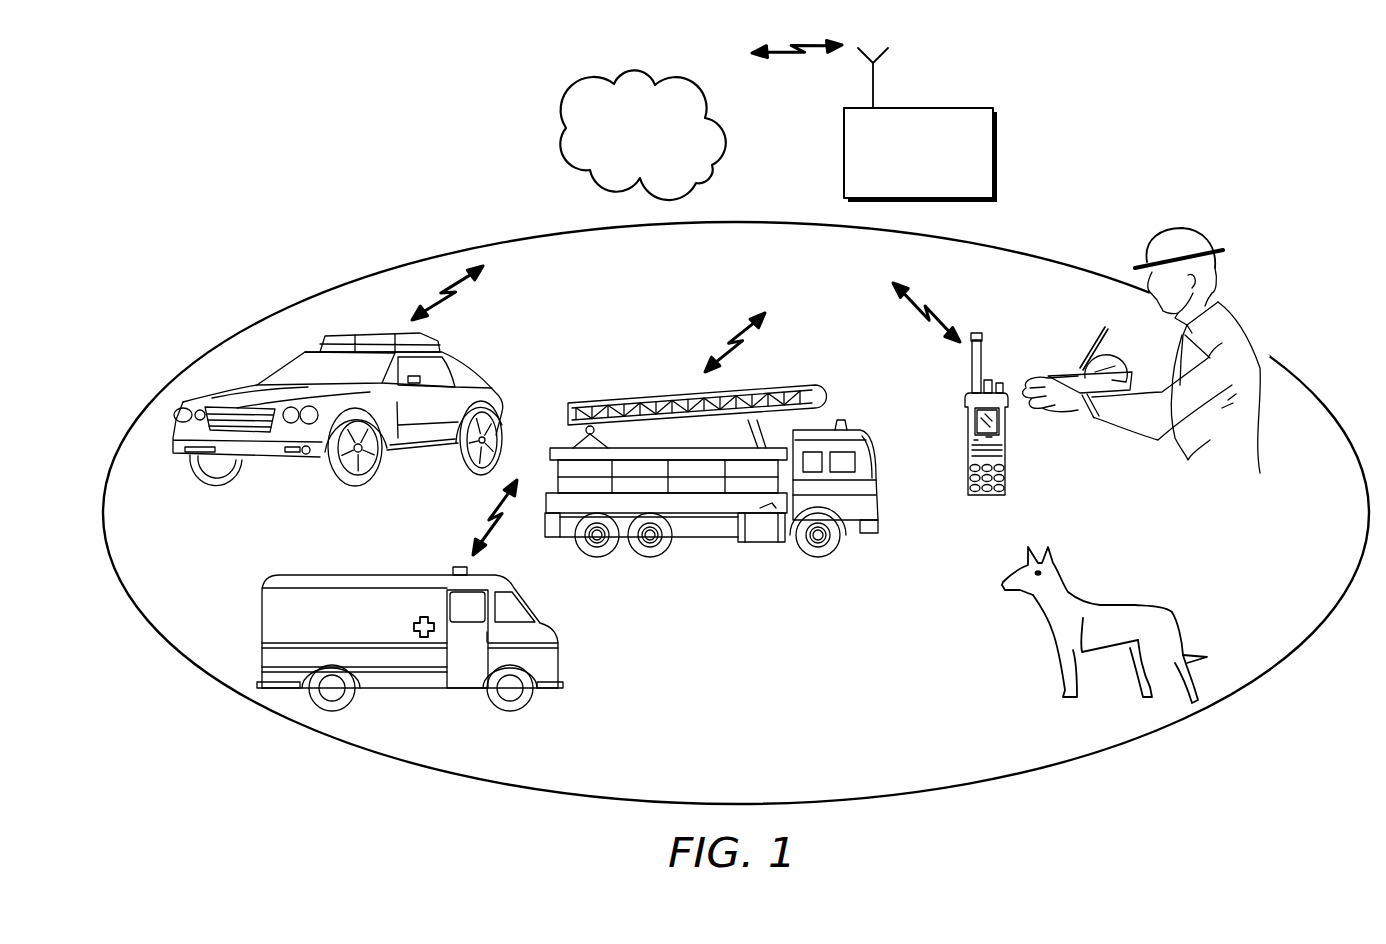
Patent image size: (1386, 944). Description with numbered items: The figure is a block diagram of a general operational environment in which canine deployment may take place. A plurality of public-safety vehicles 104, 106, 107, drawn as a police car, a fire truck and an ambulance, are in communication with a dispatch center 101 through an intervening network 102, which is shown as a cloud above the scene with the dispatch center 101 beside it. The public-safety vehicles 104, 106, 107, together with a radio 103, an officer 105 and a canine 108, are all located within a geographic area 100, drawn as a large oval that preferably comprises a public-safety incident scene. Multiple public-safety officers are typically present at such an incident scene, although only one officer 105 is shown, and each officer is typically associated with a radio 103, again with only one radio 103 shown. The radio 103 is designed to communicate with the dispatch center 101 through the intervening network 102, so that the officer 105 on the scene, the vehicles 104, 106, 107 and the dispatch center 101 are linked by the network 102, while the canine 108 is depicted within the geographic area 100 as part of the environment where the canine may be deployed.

The geographic area 100 is at (1297, 372).
The dispatch center 101 is at (977, 108).
The network 102 is at (630, 78).
The radio 103 is at (987, 497).
The public-safety vehicle 104 is at (455, 357).
The officer 105 is at (1223, 300).
The public-safety vehicle 106 is at (873, 472).
The public-safety vehicle 107 is at (543, 618).
The canine 108 is at (1147, 602).